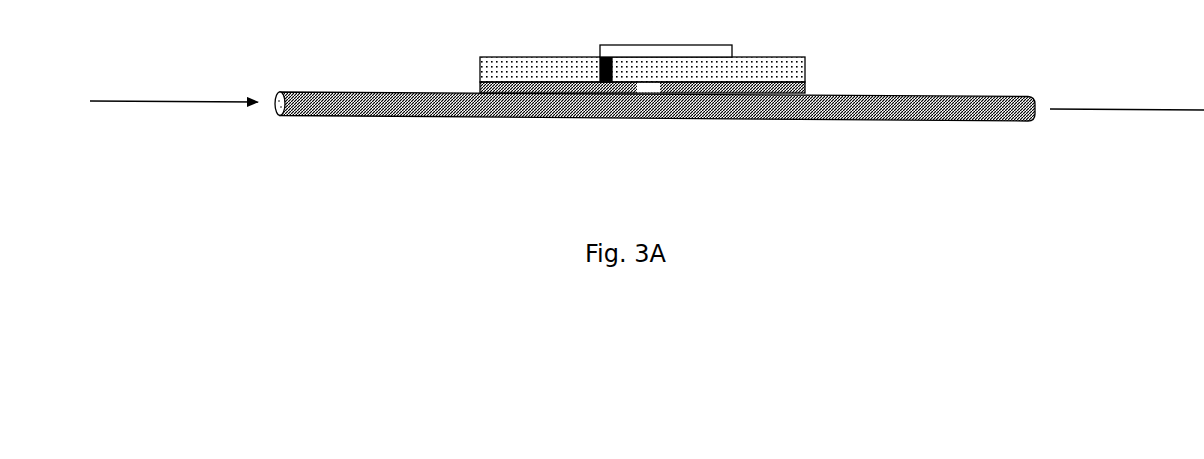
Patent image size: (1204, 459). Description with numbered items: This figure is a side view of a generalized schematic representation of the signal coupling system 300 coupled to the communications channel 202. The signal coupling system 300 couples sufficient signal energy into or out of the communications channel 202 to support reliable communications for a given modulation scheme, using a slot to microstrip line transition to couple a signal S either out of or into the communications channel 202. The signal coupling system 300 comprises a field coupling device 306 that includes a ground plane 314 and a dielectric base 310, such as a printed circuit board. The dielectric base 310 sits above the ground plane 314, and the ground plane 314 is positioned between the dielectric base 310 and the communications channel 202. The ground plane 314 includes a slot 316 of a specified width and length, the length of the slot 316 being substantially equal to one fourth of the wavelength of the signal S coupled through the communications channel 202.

The signal coupling system 300 is at (425, 238).
The communications channel 202 is at (655, 83).
The field coupling device 306 is at (743, 0).
The dielectric base 310 is at (785, 70).
The ground plane 314 is at (726, 170).
The slot 316 is at (738, 146).
The signal S is at (172, 101).